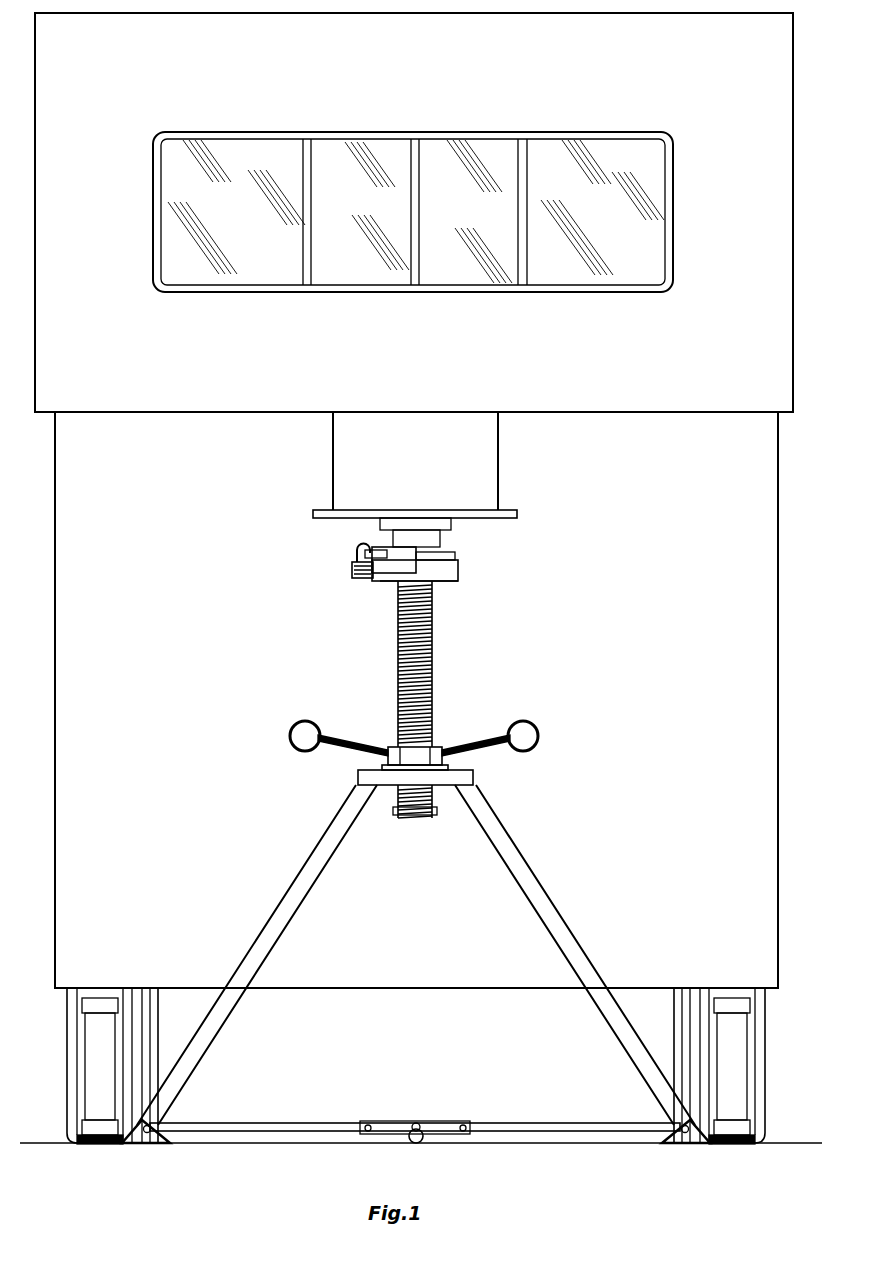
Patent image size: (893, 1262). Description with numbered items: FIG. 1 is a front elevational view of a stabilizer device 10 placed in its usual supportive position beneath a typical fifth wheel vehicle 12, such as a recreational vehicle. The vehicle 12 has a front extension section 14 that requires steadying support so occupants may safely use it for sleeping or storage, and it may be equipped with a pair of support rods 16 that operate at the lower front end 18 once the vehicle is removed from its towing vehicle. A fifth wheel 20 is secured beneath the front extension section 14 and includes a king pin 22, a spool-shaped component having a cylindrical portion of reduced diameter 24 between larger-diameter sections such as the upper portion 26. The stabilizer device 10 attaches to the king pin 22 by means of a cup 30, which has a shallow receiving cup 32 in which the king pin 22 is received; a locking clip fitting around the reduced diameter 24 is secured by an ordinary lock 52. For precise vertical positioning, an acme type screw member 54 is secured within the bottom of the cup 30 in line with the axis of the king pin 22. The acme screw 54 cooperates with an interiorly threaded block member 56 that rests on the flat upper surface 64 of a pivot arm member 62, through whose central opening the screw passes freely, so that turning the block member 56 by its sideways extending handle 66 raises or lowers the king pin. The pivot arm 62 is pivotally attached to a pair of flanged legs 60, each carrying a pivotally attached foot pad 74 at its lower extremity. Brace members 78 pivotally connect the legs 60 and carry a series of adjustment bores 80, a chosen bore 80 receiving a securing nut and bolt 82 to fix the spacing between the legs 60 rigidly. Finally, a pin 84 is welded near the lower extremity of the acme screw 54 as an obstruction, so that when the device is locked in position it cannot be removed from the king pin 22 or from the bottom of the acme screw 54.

The stabilizer device 10 is at (415, 807).
The fifth wheel vehicle 12 is at (778, 509).
The front extension section 14 is at (705, 412).
The support rods 16 is at (92, 1055).
The lower front end 18 is at (770, 645).
The fifth wheel 20 is at (333, 470).
The king pin 22 is at (440, 540).
The cylindrical portion of reduced diameter 24 is at (390, 548).
The upper portion 26 is at (452, 524).
The cup 30 is at (460, 570).
The shallow receiving cup 32 is at (446, 583).
The lock 52 is at (352, 570).
The acme type screw member 54 is at (398, 648).
The interiorly threaded block member 56 is at (396, 748).
The legs 60 is at (270, 908).
The pivot arm member 62 is at (380, 790).
The flat upper surface 64 is at (380, 766).
The handle 66 is at (370, 745).
The foot pad 74 is at (140, 1146).
The brace members 78 is at (284, 1122).
The adjustment bores 80 is at (368, 1122).
The securing nut and bolt 82 is at (416, 1120).
The pin 84 is at (437, 815).